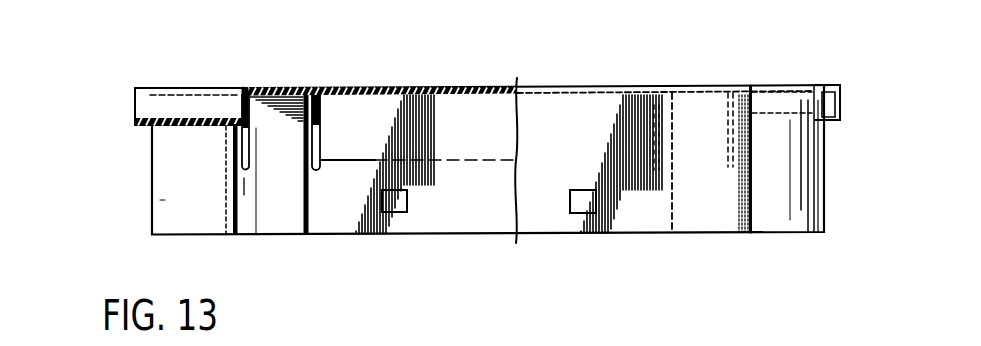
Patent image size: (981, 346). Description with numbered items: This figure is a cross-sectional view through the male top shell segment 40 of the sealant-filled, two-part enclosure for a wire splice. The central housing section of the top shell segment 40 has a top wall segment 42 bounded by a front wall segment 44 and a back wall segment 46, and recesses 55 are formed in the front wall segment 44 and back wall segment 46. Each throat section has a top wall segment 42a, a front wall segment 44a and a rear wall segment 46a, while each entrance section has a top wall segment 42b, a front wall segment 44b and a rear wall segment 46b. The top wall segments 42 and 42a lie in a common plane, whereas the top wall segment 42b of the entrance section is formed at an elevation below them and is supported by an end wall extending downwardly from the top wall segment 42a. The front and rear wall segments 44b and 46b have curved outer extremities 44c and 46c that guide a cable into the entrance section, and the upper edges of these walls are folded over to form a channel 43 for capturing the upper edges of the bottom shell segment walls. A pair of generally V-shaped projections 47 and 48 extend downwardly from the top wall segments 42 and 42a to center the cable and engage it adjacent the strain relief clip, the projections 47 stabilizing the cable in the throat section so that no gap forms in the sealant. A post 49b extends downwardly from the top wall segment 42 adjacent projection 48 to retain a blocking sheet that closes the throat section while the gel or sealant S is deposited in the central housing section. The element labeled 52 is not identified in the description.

The male top shell segment 40 is at (545, 84).
The top wall segment 42 is at (444, 88).
The top wall segment 42a is at (268, 92).
The top wall segment 42b is at (188, 122).
The channel 43 is at (160, 103).
The front wall segment 44 is at (552, 228).
The front wall segment 44a is at (710, 222).
The front wall segment 44b is at (782, 222).
The curved outer extremity 44c is at (818, 208).
The back wall segment 46 is at (470, 226).
The rear wall segment 46a is at (265, 218).
The rear wall segment 46b is at (183, 226).
The curved outer extremity 46c is at (160, 194).
The V-shaped projection 47 is at (250, 152).
The V-shaped projection 48 is at (320, 147).
The post 49b is at (316, 94).
The connector 52 is at (241, 90).
The recess 55 is at (398, 202).
The sealant S is at (366, 164).